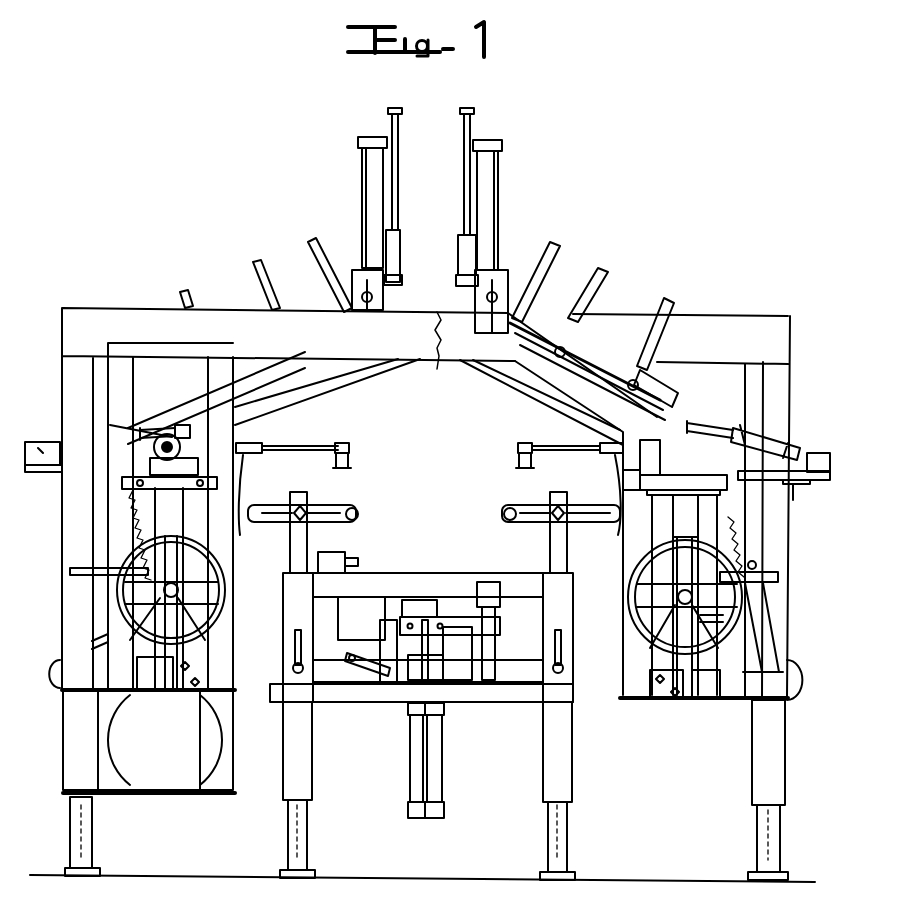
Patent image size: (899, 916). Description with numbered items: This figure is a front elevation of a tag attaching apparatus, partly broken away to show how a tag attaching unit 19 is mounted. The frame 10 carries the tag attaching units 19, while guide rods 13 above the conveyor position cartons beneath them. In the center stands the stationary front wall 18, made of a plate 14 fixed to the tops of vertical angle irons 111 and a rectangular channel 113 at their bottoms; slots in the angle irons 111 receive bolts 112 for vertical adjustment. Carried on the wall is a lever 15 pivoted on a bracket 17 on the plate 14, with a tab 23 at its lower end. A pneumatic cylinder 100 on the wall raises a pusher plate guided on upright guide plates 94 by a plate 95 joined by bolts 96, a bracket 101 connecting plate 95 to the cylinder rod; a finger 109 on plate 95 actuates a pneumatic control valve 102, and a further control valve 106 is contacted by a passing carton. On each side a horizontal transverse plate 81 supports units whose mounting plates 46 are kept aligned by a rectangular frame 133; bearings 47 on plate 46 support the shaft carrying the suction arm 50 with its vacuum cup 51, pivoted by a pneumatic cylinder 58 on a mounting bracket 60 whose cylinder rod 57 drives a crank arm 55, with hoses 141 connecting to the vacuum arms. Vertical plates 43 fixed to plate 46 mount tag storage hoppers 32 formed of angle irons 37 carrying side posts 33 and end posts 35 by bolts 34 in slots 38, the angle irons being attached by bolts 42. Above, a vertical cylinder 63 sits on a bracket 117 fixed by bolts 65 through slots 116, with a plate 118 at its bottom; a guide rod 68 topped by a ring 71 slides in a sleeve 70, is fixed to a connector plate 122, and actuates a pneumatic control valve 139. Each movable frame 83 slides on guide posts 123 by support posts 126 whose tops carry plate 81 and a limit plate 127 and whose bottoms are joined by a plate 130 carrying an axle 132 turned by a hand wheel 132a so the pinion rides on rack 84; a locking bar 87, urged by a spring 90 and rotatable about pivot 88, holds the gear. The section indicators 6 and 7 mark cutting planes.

The frame 10 is at (96, 308).
The guide rods 13 is at (356, 508).
The plate 14 is at (397, 573).
The lever 15 is at (490, 650).
The bracket 17 is at (492, 605).
The front wall 18 is at (348, 700).
The tag attaching unit 19 is at (340, 372).
The tab 23 is at (419, 608).
The tag storage hopper 32 is at (316, 238).
The side posts 33 is at (608, 272).
The bolts 34 is at (558, 345).
The end posts 35 is at (560, 246).
The angle irons 37 is at (596, 390).
The slots 38 is at (590, 362).
The bolts 42 is at (668, 402).
The vertical plates 43 is at (560, 392).
The mounting plate 46 is at (793, 484).
The bearings 47 is at (170, 462).
The suction arm 50 is at (280, 449).
The vacuum cup 51 is at (341, 470).
The crank arm 55 is at (178, 425).
The cylinder rod 57 is at (150, 425).
The pneumatic cylinder 58 is at (52, 440).
The mounting bracket 60 is at (34, 466).
The vertical cylinder 63 is at (360, 165).
The bolts 65 is at (480, 322).
The guide rod 68 is at (465, 190).
The sleeve 70 is at (462, 250).
The ring 71 is at (388, 111).
The transverse plate 81 is at (695, 495).
The movable frame 83 is at (198, 532).
The rack 84 is at (660, 622).
The locking bar 87 is at (782, 575).
The pivot 88 is at (742, 588).
The spring 90 is at (770, 560).
The guide plates 94 is at (455, 600).
The plate 95 is at (462, 640).
The bolts 96 is at (412, 600).
The pneumatic cylinder 100 is at (415, 760).
The bracket 101 is at (440, 685).
The pneumatic control valve 102 is at (350, 660).
The pneumatic control valve 106 is at (330, 555).
The finger 109 is at (392, 686).
The angle irons 111 is at (294, 615).
The bolts 112 is at (296, 665).
The rectangular channel 113 is at (568, 690).
The slots 116 is at (494, 322).
The bracket 117 is at (486, 298).
The plate 118 is at (356, 272).
The connector plate 122 is at (462, 280).
The guide posts 123 is at (112, 372).
The support posts 126 is at (655, 567).
The limit plate 127 is at (125, 481).
The plate 130 is at (762, 604).
The axle 132 is at (165, 618).
The hand wheel 132a is at (118, 632).
The rectangular frame 133 is at (640, 487).
The pneumatic control valve 139 is at (400, 245).
The hoses 141 is at (238, 525).
The section line 6 is at (455, 546).
The section line 7 is at (509, 550).